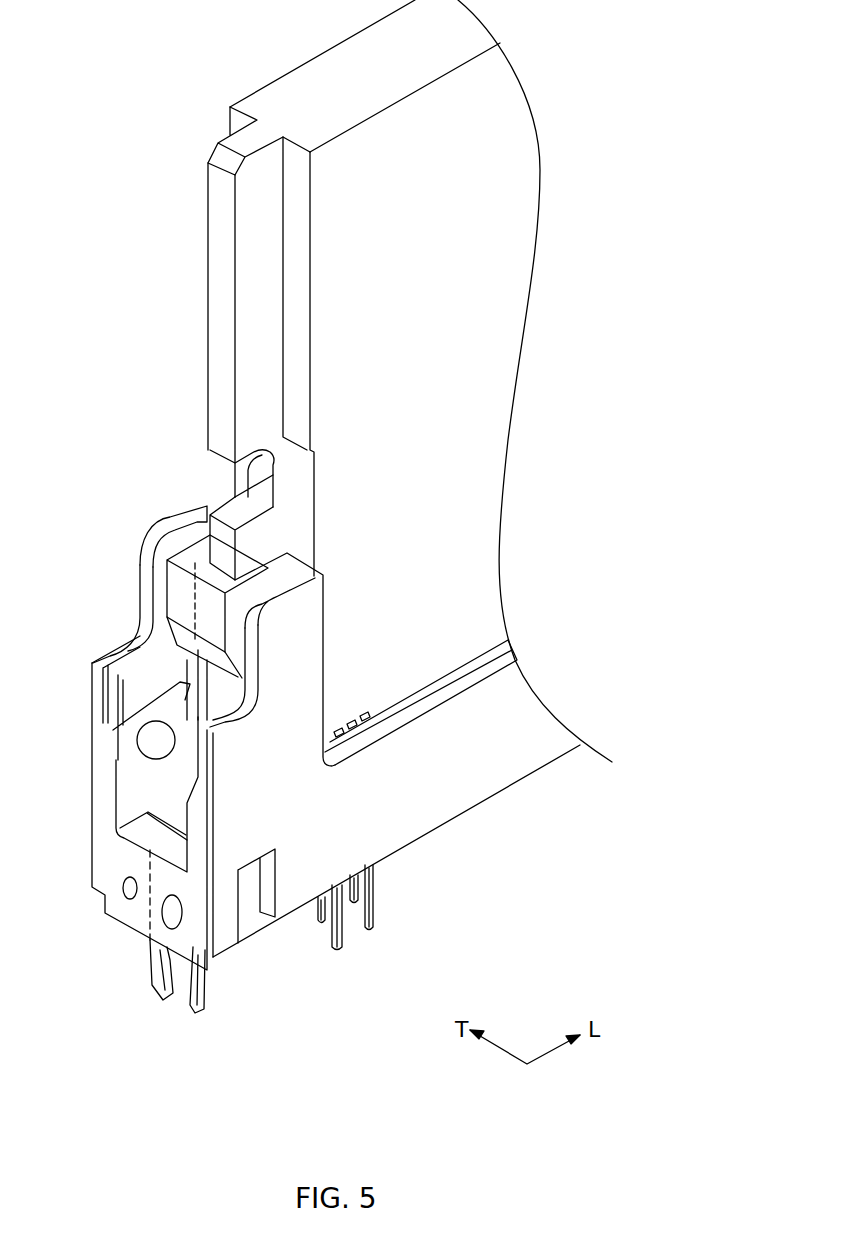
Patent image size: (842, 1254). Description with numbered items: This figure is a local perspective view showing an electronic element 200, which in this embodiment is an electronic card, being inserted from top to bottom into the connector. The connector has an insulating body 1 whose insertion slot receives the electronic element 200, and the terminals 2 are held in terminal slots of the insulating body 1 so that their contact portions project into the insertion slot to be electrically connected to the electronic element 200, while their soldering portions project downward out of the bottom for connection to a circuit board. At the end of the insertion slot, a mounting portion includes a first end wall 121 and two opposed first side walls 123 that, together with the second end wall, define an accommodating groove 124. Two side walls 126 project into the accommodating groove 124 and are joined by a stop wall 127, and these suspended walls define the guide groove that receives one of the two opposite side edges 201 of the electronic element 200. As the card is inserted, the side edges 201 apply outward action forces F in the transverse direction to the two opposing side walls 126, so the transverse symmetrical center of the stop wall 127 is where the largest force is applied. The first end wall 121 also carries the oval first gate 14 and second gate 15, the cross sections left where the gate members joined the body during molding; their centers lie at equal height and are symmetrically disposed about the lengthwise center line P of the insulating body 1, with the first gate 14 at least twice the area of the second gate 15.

The electronic element 200 is at (275, 90).
The side edge 201 is at (230, 513).
The side wall 126 is at (170, 526).
The stop wall 127 is at (178, 597).
The first side wall 123 is at (108, 703).
The accommodating groove 124 is at (132, 790).
The first end wall 121 is at (120, 853).
The second gate 15 is at (120, 887).
The center line P is at (150, 915).
The first gate 14 is at (177, 915).
The insulating body 1 is at (428, 805).
The terminal 2 is at (370, 907).
The action force F is at (188, 515).